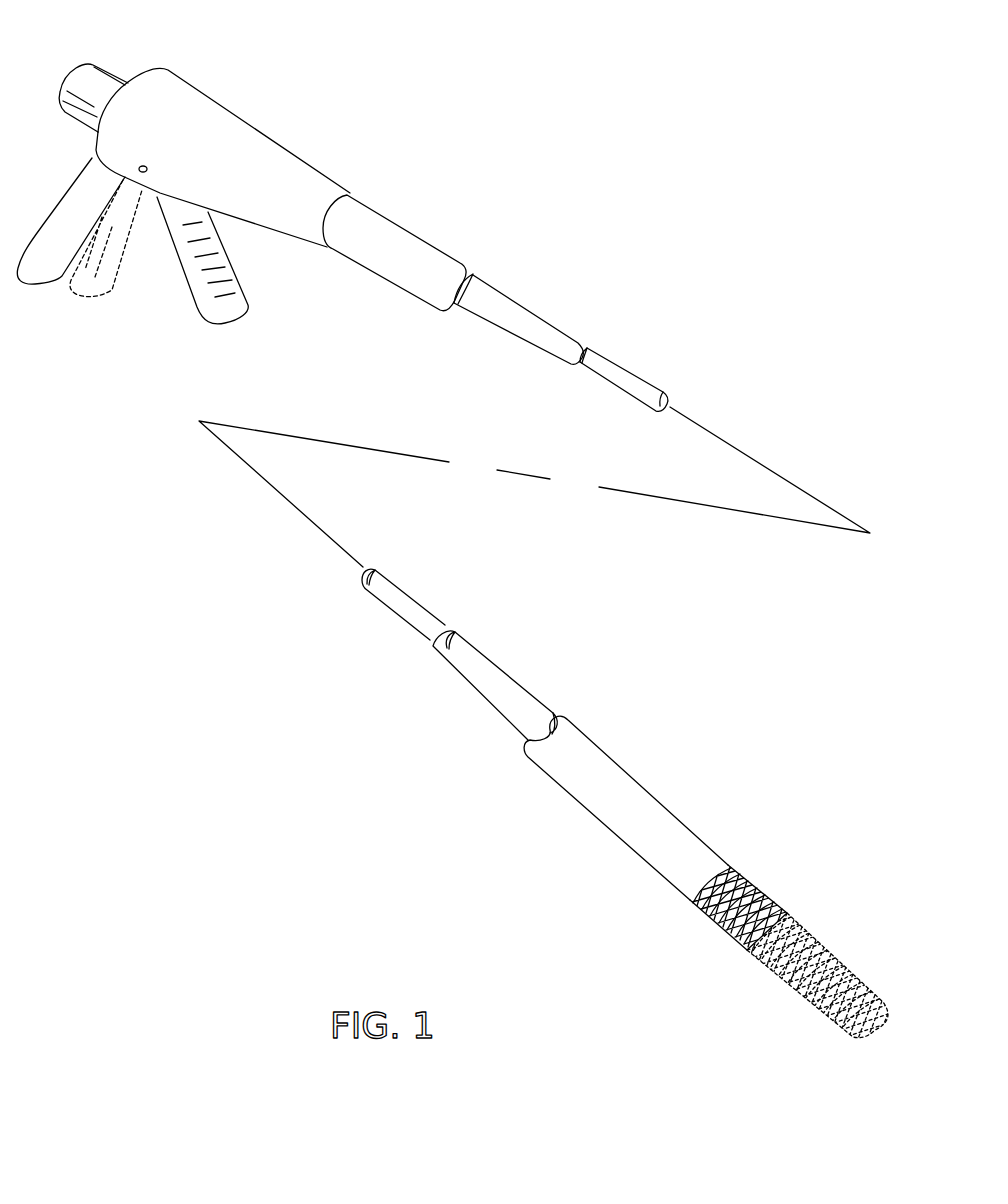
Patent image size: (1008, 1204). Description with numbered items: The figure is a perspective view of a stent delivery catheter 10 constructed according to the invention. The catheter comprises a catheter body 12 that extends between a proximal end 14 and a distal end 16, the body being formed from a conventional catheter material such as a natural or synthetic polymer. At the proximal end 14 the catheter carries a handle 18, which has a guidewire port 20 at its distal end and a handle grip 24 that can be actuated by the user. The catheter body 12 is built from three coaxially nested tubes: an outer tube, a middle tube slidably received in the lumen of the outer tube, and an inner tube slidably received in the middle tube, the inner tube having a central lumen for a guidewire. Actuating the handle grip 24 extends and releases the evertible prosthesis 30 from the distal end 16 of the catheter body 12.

The stent delivery catheter 10 is at (556, 213).
The catheter body 12 is at (410, 318).
The proximal end 14 is at (370, 189).
The distal end 16 is at (798, 869).
The handle 18 is at (230, 118).
The guidewire port 20 is at (102, 82).
The handle grip 24 is at (96, 323).
The evertible prosthesis 30 is at (730, 937).